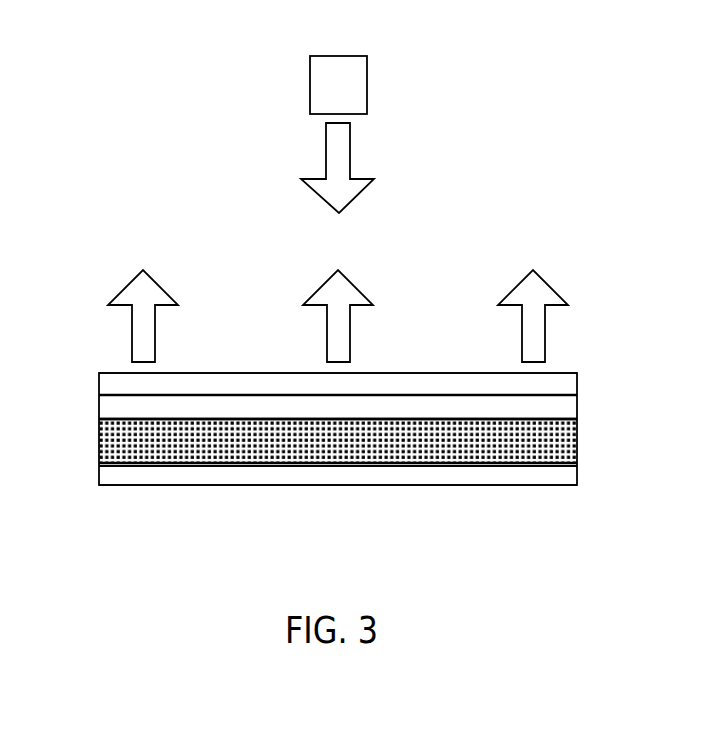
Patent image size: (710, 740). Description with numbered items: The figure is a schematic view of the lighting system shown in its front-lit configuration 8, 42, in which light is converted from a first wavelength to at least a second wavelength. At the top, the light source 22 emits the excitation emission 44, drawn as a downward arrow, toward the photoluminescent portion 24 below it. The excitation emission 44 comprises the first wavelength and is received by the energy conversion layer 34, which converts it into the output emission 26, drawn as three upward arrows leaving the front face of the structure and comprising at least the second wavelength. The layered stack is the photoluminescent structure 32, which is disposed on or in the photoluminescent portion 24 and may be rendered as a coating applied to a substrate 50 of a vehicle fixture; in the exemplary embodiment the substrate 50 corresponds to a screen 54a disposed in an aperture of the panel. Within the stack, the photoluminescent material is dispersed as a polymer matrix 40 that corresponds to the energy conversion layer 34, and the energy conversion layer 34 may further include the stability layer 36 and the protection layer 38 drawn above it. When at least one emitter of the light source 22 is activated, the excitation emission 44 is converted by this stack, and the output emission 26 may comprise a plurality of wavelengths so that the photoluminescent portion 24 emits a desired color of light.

The light-emitting device / assembly 8, 42 is at (492, 62).
The light source 22 is at (338, 85).
The excitation emission 44 is at (350, 162).
The photoluminescent portion 24 is at (573, 227).
The output emission 26 is at (150, 293).
The photoluminescent structure 32 is at (598, 353).
The protection layer 38 is at (103, 383).
The stability layer 36 is at (103, 406).
The energy conversion layer 34 is at (562, 436).
The polymer matrix 40 is at (573, 450).
The screen 54a is at (103, 472).
The substrate 50 is at (133, 473).